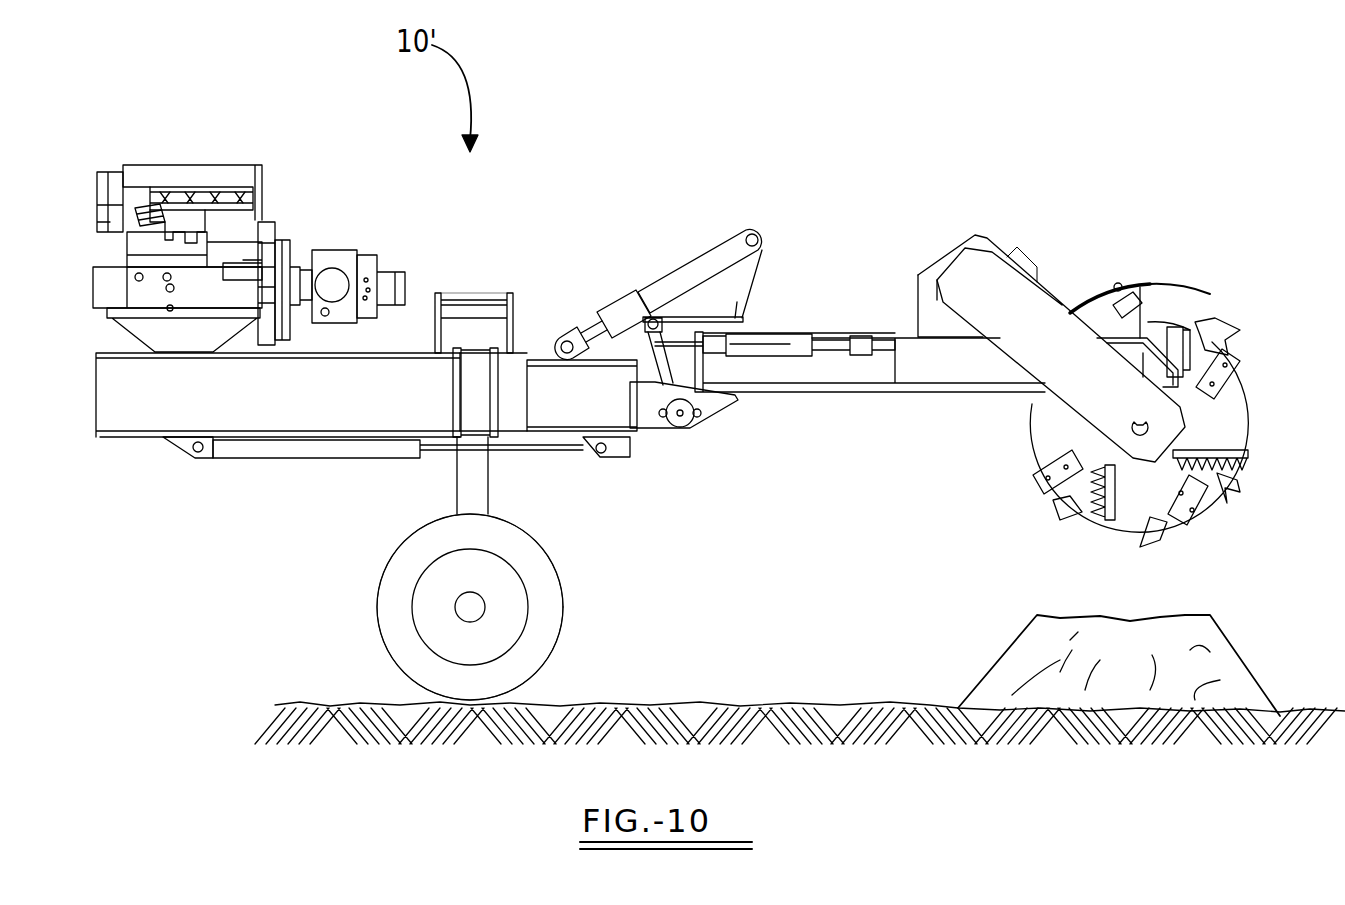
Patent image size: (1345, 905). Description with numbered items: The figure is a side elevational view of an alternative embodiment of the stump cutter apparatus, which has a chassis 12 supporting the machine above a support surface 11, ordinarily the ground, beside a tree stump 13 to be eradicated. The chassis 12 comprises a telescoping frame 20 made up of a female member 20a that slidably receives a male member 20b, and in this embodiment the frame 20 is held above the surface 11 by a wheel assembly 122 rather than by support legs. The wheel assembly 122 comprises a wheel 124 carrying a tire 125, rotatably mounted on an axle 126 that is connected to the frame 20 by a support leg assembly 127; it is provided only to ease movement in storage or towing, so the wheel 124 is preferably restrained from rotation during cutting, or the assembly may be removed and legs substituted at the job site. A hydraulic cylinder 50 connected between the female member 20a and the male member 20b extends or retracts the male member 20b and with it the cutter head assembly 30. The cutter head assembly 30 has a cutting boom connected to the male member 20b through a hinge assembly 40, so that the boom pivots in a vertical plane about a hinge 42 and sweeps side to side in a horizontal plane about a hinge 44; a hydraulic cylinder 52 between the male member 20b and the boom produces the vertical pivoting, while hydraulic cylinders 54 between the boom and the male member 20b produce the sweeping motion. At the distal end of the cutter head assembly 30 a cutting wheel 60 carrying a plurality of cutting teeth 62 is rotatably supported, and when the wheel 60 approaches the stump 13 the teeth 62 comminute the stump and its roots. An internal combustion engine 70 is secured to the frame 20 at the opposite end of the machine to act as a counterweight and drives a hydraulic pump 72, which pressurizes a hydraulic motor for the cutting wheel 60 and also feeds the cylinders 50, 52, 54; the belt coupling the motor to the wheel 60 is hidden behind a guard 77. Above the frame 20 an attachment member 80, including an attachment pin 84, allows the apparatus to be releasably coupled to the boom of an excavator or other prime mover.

The support surface 11 is at (778, 708).
The chassis 12 is at (443, 383).
The tree stump 13 is at (1012, 650).
The telescoping frame 20 is at (533, 354).
The female member 20a is at (115, 423).
The male member 20b is at (570, 413).
The cutter head assembly 30 is at (963, 396).
The hinge assembly 40 is at (727, 405).
The hinge 42 is at (688, 430).
The hinge 44 is at (728, 388).
The hydraulic cylinder 50 is at (278, 455).
The hydraulic cylinder 52 is at (697, 268).
The hydraulic cylinders 54 is at (775, 335).
The cutting wheel 60 is at (1245, 428).
The cutting teeth 62 is at (1237, 492).
The internal combustion engine 70 is at (185, 165).
The hydraulic pump 72 is at (340, 252).
The guard 77 is at (1050, 312).
The attachment member 80 is at (470, 262).
The second attachment pin 84 is at (483, 300).
The wheel assembly 122 is at (562, 548).
The wheel 124 is at (513, 637).
The tire 125 is at (563, 613).
The axle 126 is at (465, 607).
The support leg assembly 127 is at (463, 485).